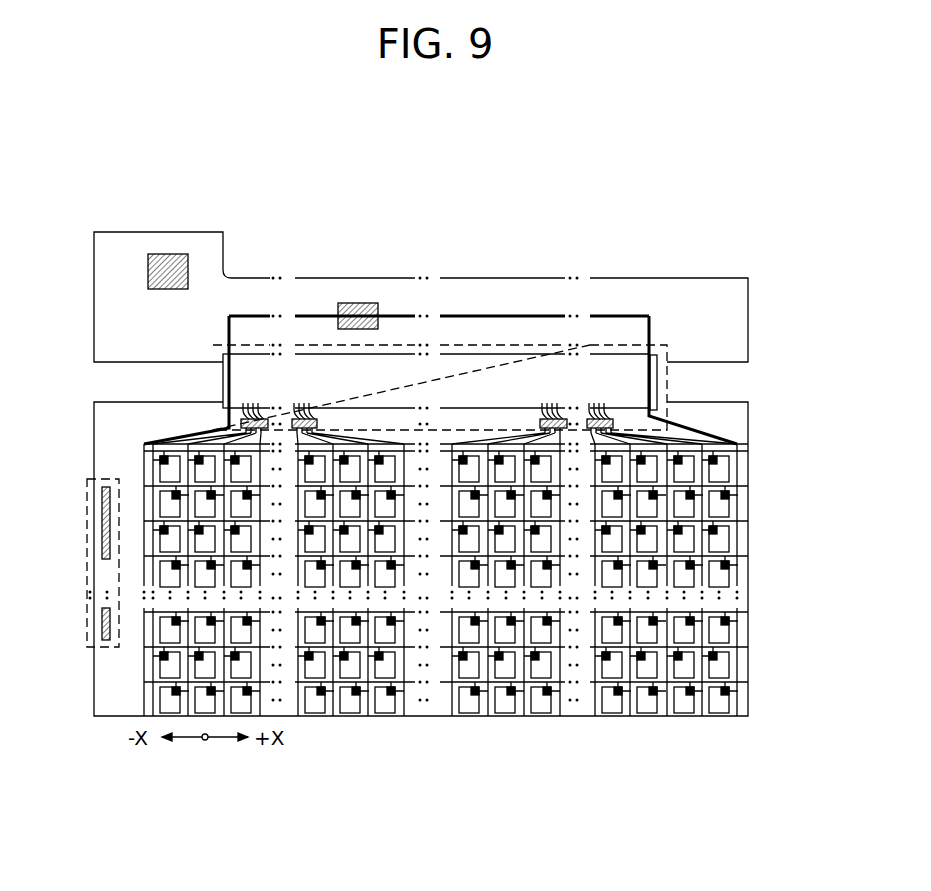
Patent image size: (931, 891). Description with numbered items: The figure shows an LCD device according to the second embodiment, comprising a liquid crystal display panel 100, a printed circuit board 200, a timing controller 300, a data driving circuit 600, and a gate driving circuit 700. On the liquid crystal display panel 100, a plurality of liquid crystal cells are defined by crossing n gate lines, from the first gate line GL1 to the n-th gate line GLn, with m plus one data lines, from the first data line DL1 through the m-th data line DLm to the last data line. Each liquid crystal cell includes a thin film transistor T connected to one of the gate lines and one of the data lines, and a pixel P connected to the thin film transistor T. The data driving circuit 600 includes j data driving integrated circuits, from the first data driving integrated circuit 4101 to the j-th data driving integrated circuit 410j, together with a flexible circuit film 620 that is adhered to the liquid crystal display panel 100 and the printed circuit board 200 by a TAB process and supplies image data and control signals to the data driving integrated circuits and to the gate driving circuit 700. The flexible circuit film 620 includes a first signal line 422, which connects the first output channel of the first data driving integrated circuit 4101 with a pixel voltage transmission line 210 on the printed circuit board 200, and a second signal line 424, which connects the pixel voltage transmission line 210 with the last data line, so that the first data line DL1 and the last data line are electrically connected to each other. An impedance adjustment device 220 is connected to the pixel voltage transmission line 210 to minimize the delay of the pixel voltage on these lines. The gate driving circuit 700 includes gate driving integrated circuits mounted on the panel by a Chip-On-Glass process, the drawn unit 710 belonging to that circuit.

The liquid crystal display panel 100 is at (93, 407).
The printed circuit board 200 is at (748, 332).
The pixel voltage transmission line 210 is at (477, 316).
The impedance adjustment device 220 is at (357, 315).
The timing controller 300 is at (167, 275).
The first data driving integrated circuit 4101 is at (258, 424).
The j-th data driving integrated circuit 410j is at (563, 424).
The first signal line 422 is at (223, 383).
The second signal line 424 is at (657, 380).
The data driving circuit 600 is at (667, 345).
The flexible circuit film 620 is at (604, 363).
The gate driving circuit 700 is at (87, 563).
The gate driving unit 710 is at (102, 522).
The first gate line GL1 is at (748, 452).
The n-th gate line GLn is at (748, 681).
The first data line DL1 is at (152, 470).
The m-th data line DLm is at (702, 545).
The thin film transistor T is at (729, 495).
The pixel P is at (725, 510).